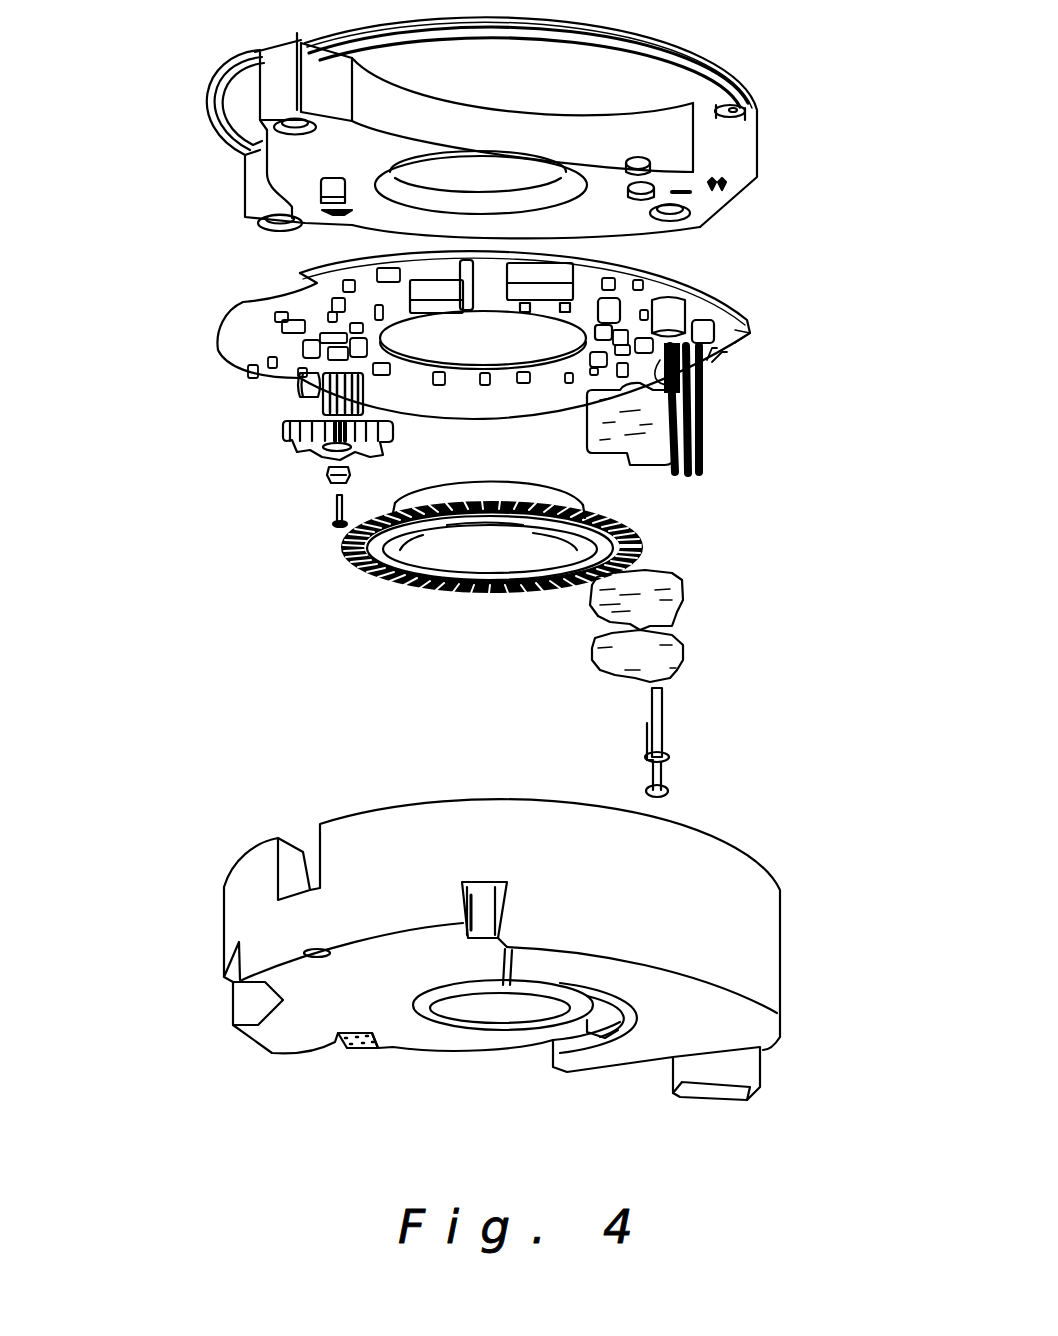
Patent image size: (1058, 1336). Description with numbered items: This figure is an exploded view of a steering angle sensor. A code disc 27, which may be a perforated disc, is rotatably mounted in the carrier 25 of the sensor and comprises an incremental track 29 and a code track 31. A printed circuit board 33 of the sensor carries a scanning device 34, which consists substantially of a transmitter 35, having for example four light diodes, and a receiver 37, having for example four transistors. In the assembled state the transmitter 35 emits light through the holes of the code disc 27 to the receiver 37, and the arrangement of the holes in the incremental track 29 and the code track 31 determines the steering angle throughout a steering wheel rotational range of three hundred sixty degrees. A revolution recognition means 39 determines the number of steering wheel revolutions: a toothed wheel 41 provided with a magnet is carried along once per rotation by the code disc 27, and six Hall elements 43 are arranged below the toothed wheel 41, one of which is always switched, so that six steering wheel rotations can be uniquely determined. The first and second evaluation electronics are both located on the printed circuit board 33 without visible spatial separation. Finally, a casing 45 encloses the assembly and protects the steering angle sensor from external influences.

The carrier 25 is at (757, 140).
The code disc 27 is at (388, 583).
The incremental track 29 is at (345, 557).
The code track 31 is at (625, 529).
The printed circuit board 33 is at (745, 300).
The scanning device 34 is at (742, 572).
The transmitter 35 is at (703, 385).
The receiver 37 is at (687, 602).
The revolution recognition means 39 is at (280, 452).
The toothed wheel 41 is at (313, 453).
The Hall elements 43 is at (300, 375).
The casing 45 is at (219, 875).